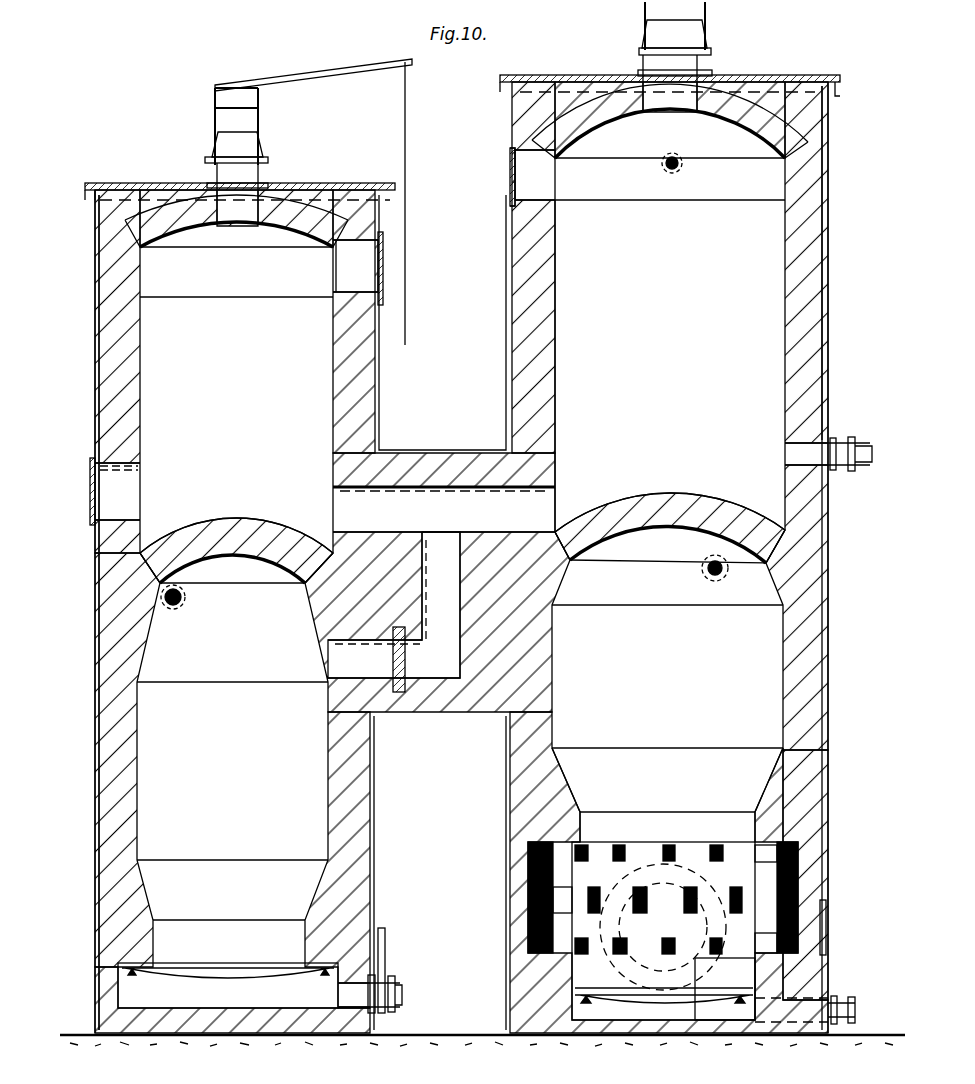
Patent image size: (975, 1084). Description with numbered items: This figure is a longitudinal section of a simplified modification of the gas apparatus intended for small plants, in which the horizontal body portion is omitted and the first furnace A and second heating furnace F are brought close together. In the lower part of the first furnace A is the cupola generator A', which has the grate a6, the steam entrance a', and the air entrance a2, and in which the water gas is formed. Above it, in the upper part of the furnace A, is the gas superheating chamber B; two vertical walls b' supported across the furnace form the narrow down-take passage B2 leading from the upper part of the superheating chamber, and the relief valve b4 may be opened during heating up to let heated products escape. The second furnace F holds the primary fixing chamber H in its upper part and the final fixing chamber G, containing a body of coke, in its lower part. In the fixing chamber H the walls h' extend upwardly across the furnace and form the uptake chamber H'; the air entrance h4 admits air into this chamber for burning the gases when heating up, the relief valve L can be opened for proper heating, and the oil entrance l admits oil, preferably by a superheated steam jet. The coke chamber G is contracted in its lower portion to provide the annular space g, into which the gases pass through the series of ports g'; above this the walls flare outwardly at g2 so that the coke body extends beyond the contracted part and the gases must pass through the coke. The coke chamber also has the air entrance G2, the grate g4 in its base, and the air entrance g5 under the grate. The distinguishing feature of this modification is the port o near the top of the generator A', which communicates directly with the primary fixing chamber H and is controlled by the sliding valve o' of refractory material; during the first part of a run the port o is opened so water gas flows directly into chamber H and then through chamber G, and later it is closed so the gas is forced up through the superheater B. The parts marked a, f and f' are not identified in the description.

The first furnace A is at (77, 611).
The cupola generator A' is at (232, 737).
The metal lining plate a is at (234, 612).
The steam entrance a' is at (398, 970).
The air entrance a2 is at (338, 993).
The grate a6 is at (195, 975).
The gas superheating chamber B is at (236, 402).
The down-take passage B2 is at (137, 487).
The vertical walls b' is at (330, 355).
The outlet or relief valve b4 is at (218, 135).
The second heating furnace F is at (837, 557).
The lining plate f is at (664, 892).
The lining plate f' is at (667, 263).
The final fixing chamber G is at (667, 669).
The air entrance G2 is at (708, 578).
The annular space g is at (660, 931).
The series of ports g' is at (649, 917).
The flaring walls g2 is at (582, 800).
The grate g4 is at (642, 993).
The air entrance g5 is at (834, 1000).
The primary fixing chamber H is at (670, 336).
The uptake chamber H' is at (581, 489).
The walls h' is at (554, 318).
The air entrance h4 is at (785, 455).
The relief valve L is at (645, 33).
The oil entrance l is at (678, 157).
The port o is at (394, 605).
The sliding valve o' is at (413, 659).